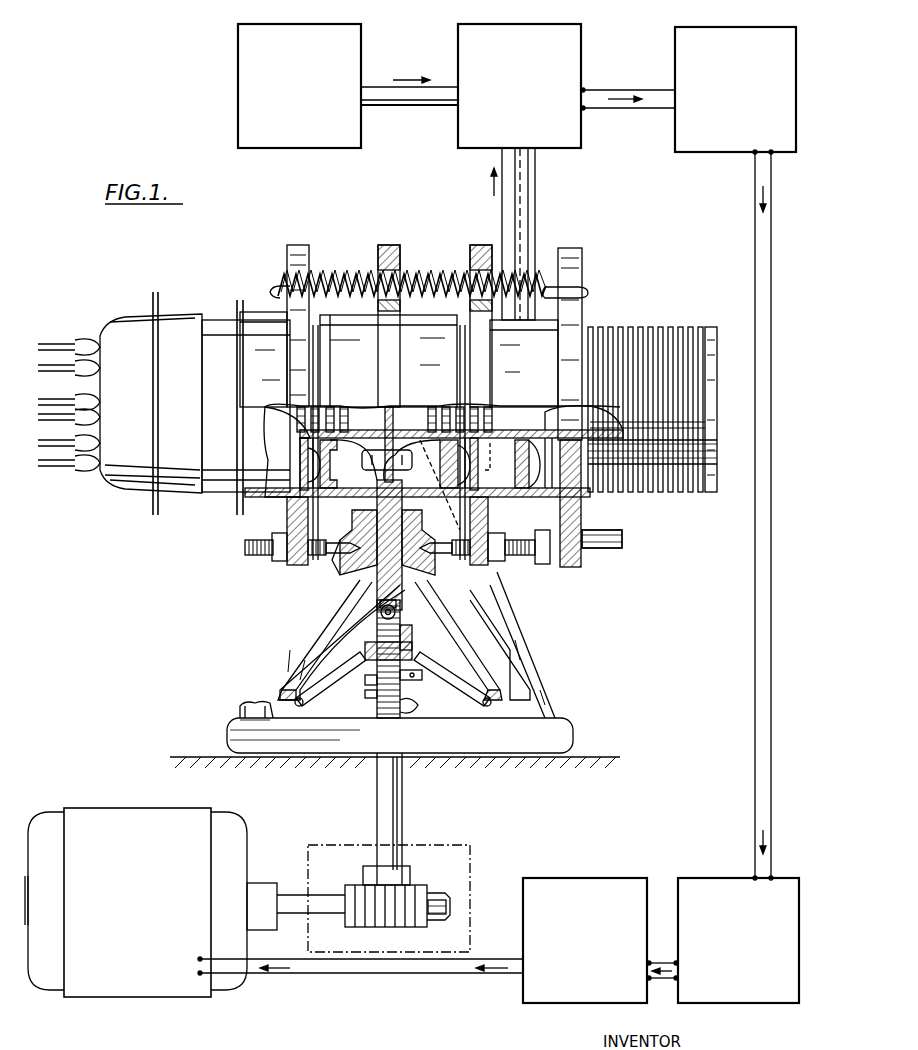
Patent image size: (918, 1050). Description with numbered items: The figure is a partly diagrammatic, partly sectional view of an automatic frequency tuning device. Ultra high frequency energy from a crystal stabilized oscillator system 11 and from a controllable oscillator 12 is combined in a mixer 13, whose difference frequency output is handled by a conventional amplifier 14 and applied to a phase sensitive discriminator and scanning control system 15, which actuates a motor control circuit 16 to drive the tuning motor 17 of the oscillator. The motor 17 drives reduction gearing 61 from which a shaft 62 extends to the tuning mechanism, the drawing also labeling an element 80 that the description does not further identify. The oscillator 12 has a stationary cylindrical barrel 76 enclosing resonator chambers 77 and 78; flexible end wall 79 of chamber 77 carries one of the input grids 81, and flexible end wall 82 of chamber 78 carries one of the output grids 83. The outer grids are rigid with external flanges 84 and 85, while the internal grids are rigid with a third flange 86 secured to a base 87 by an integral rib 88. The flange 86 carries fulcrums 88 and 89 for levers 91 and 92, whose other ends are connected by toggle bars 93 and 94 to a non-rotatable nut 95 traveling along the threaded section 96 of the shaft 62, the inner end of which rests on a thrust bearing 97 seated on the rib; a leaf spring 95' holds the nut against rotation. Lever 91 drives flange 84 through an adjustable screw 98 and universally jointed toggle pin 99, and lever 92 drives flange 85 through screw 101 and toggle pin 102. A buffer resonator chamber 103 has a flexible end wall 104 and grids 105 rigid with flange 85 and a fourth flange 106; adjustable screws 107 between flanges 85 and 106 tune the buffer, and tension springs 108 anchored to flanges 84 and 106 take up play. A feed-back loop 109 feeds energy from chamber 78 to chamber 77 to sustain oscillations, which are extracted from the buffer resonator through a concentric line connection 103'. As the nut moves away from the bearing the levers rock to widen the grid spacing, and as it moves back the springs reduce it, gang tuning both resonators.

The crystal stabilized oscillator system 11 is at (322, 24).
The controllable oscillator 12 is at (430, 266).
The mixer 13 is at (542, 24).
The amplifier 14 is at (733, 27).
The phase sensitive discriminator and scanning control system 15 is at (700, 868).
The motor control circuit 16 is at (600, 868).
The tuning motor 17 is at (248, 848).
The reduction gearing 61 is at (470, 862).
The shaft 62 is at (403, 800).
The stationary cylindrical barrel 76 is at (360, 352).
The resonator chamber 77 is at (335, 490).
The resonator chamber 78 is at (402, 505).
The flexible end wall 79 is at (300, 478).
The adjusting screw 80 is at (408, 659).
The input grids 81 is at (333, 407).
The flexible end wall 82 is at (470, 456).
The output grids 83 is at (446, 407).
The external flange 84 is at (295, 565).
The external flange 85 is at (483, 565).
The third external flange 86 is at (388, 245).
The base 87 is at (505, 630).
The rib 88 is at (348, 538).
The fulcrum 89 is at (448, 518).
The lever 91 is at (312, 648).
The lever 92 is at (470, 645).
The toggle bar 93 is at (322, 688).
The toggle bar 94 is at (448, 690).
The nut 95 is at (358, 695).
The leaf spring 95' is at (375, 646).
The threaded section 96 is at (418, 706).
The thrust bearing 97 is at (378, 618).
The adjustable screw 98 is at (258, 557).
The toggle pin 99 is at (335, 555).
The adjustable screw 101 is at (520, 557).
The toggle pin 102 is at (452, 555).
The buffer resonator chamber 103 is at (526, 477).
The concentric line connection 103' is at (539, 234).
The flexible end wall 104 is at (532, 416).
The grids 105 is at (486, 407).
The fourth external flange 106 is at (568, 567).
The adjustable screws 107 is at (604, 550).
The tension springs 108 is at (303, 275).
The feed-back loop 109 is at (412, 478).